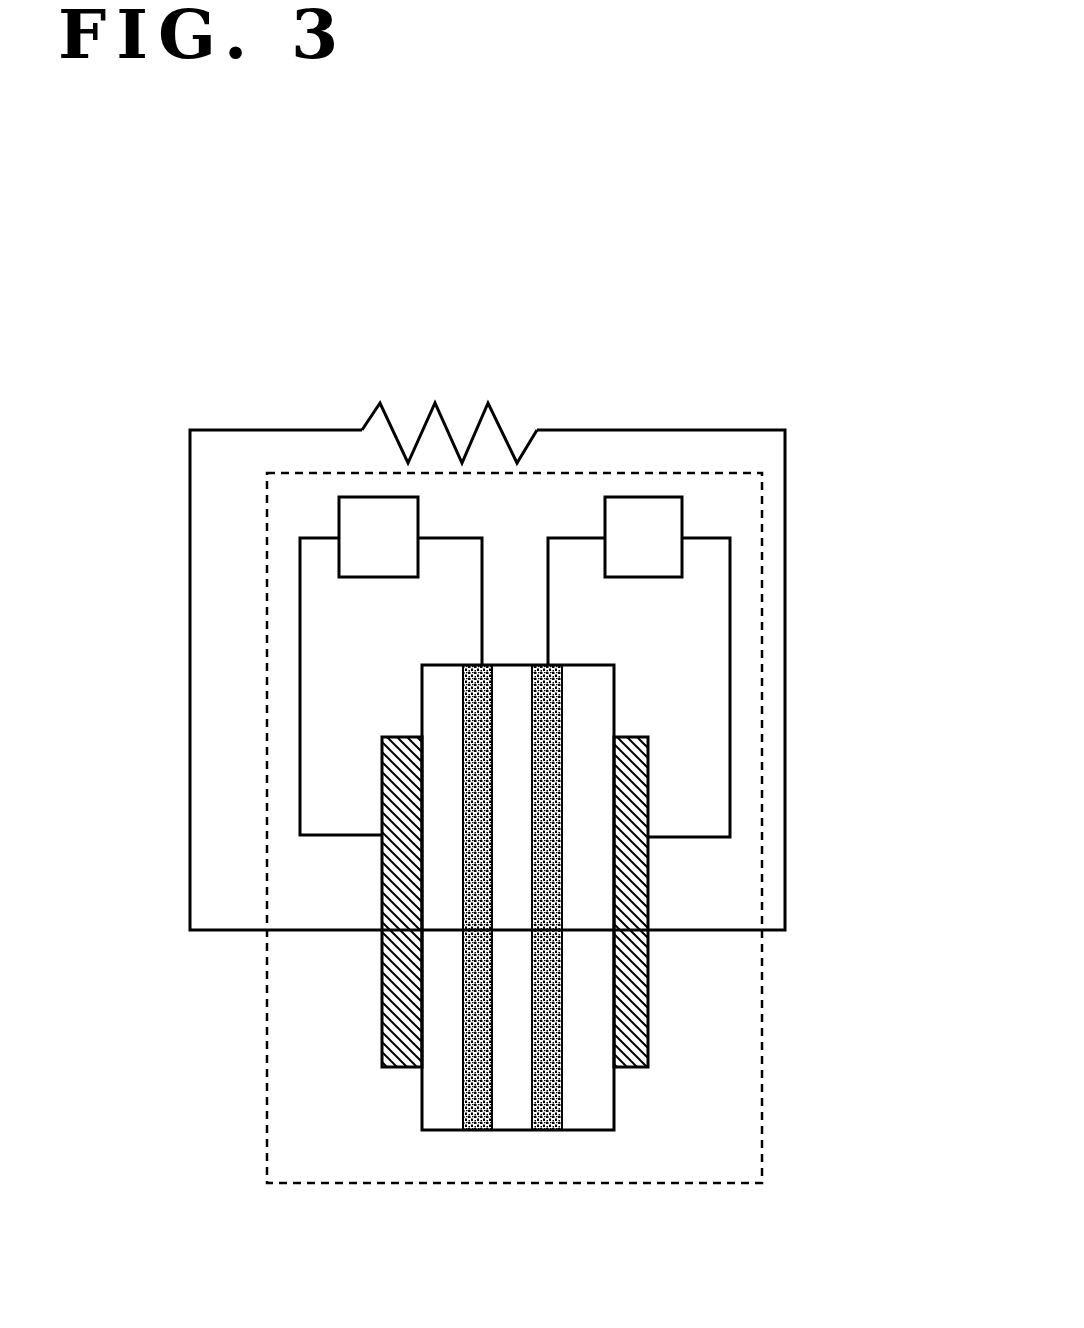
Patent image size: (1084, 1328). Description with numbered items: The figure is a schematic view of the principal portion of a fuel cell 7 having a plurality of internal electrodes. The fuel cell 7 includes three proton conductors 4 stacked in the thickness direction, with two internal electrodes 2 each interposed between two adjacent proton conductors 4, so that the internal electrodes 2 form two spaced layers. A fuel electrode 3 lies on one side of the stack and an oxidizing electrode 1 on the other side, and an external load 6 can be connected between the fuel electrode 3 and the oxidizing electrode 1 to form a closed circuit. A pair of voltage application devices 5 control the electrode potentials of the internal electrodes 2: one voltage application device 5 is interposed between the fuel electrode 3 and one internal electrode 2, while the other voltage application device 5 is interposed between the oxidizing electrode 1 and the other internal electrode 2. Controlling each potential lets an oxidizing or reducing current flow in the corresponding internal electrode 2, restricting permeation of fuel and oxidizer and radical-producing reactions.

The oxidizing electrode 1 is at (634, 940).
The internal electrode 2 is at (491, 789).
The fuel electrode 3 is at (379, 899).
The proton conductor 4 is at (453, 1056).
The voltage application device 5 is at (359, 537).
The external load 6 is at (519, 404).
The fuel cell 7 is at (760, 972).